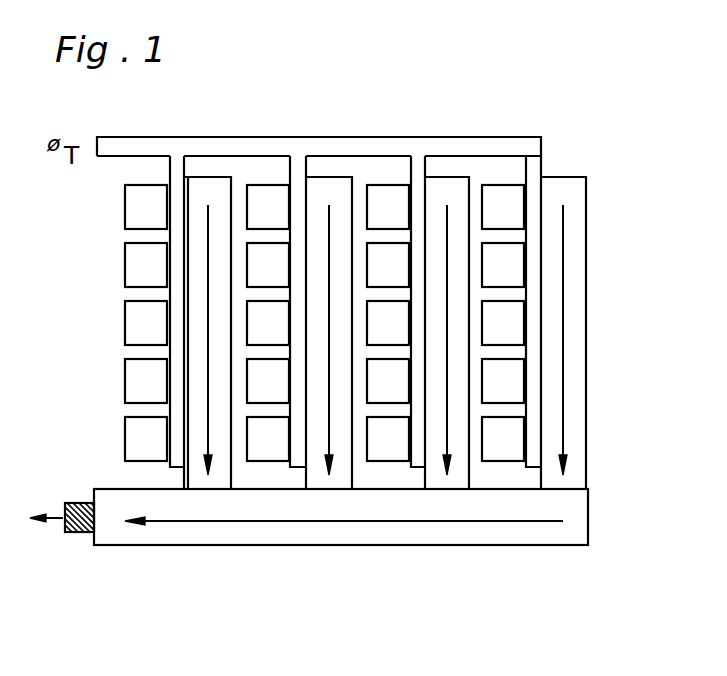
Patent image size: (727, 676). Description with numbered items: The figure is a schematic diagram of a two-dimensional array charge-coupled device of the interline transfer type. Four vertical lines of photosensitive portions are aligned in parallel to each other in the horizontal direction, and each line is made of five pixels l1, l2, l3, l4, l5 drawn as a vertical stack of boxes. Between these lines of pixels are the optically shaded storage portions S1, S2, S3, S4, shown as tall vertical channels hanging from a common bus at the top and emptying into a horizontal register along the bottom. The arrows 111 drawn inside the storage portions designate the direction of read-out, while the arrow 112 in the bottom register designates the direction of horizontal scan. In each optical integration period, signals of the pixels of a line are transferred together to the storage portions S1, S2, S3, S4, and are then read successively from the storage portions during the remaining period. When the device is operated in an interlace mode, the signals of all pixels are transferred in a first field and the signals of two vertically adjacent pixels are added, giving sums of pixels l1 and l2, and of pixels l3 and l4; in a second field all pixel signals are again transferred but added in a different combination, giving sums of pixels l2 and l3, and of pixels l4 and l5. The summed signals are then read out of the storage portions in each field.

The storage portion S1 is at (212, 177).
The storage portion S2 is at (335, 177).
The storage portion S3 is at (453, 177).
The storage portion S4 is at (577, 177).
The arrows 111 is at (209, 205).
The arrow 112 is at (337, 545).
The pixel l1 is at (324, 439).
The pixel l2 is at (324, 381).
The pixel l3 is at (324, 323).
The pixel l4 is at (324, 265).
The pixel l5 is at (324, 207).